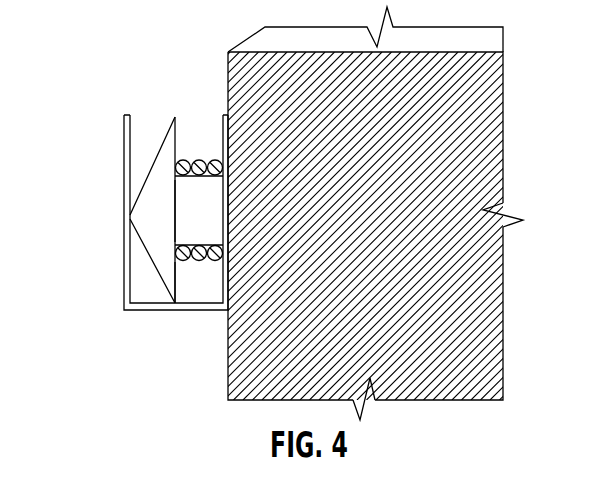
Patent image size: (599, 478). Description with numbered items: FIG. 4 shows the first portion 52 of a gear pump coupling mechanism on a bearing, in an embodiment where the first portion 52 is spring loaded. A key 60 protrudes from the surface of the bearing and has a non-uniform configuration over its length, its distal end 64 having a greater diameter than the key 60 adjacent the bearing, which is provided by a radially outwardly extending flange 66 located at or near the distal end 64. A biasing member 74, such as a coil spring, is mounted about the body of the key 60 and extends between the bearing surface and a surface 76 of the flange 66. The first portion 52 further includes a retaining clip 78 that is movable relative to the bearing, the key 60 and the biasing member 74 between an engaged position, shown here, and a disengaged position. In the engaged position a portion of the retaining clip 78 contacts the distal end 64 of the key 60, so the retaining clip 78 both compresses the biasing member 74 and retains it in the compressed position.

The first portion of the coupling mechanism 52 is at (105, 150).
The key 60 is at (207, 187).
The distal end 64 is at (177, 196).
The flange 66 is at (155, 213).
The biasing member 74 is at (215, 262).
The surface of the flange 76 is at (177, 288).
The retaining clip 78 is at (127, 262).